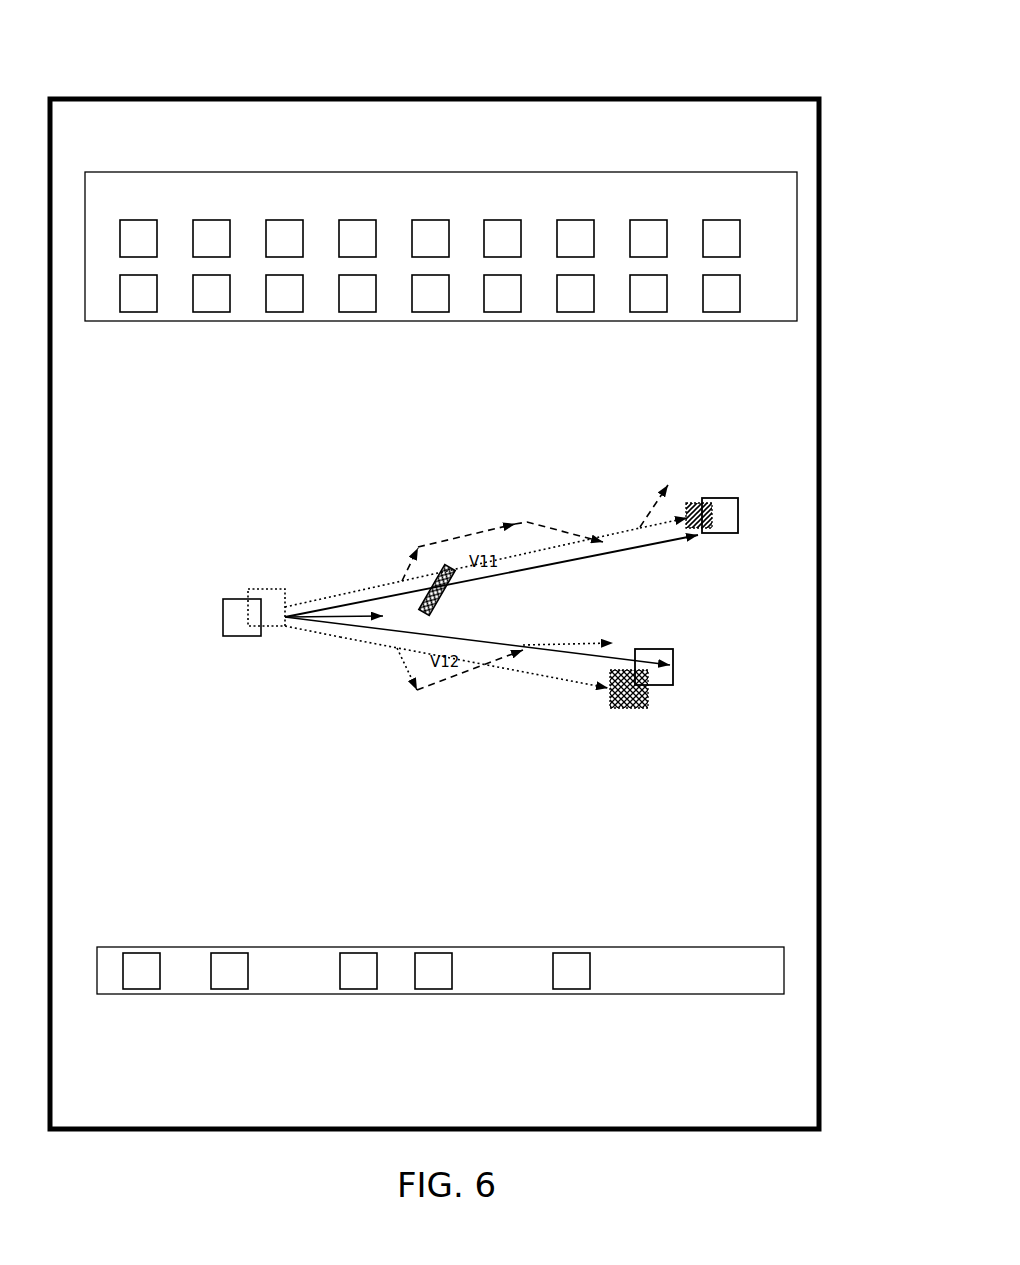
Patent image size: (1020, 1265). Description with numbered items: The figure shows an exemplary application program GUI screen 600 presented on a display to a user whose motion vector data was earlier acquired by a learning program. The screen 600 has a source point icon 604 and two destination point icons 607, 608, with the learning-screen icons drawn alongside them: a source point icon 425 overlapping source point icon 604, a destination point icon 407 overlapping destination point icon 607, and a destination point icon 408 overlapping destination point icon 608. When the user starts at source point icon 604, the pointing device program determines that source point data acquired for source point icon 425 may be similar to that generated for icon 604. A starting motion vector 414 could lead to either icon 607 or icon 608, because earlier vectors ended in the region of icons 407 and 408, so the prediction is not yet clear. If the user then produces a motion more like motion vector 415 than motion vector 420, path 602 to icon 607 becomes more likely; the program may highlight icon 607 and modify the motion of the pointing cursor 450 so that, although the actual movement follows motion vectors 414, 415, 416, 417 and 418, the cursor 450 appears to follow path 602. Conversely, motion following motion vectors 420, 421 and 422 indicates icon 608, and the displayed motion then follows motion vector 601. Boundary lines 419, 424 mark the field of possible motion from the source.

The application program GUI screen 600 is at (603, 82).
The source point icon 604 is at (223, 626).
The source point icon 425 is at (248, 589).
The motion vector 414 is at (343, 620).
The path 602 is at (572, 563).
The motion vector 601 is at (500, 640).
The upper boundary line 419 is at (343, 593).
The motion vector 415 is at (402, 582).
The motion vector 416 is at (458, 533).
The motion vector 417 is at (573, 532).
The motion vector 418 is at (632, 525).
The destination point icon 407 is at (686, 503).
The destination point icon 607 is at (727, 498).
The pointing cursor 450 is at (445, 592).
The lower boundary line 424 is at (308, 635).
The motion vector 420 is at (398, 655).
The motion vector 421 is at (458, 677).
The motion vector 422 is at (570, 645).
The destination point icon 608 is at (673, 650).
The destination point icon 408 is at (633, 710).